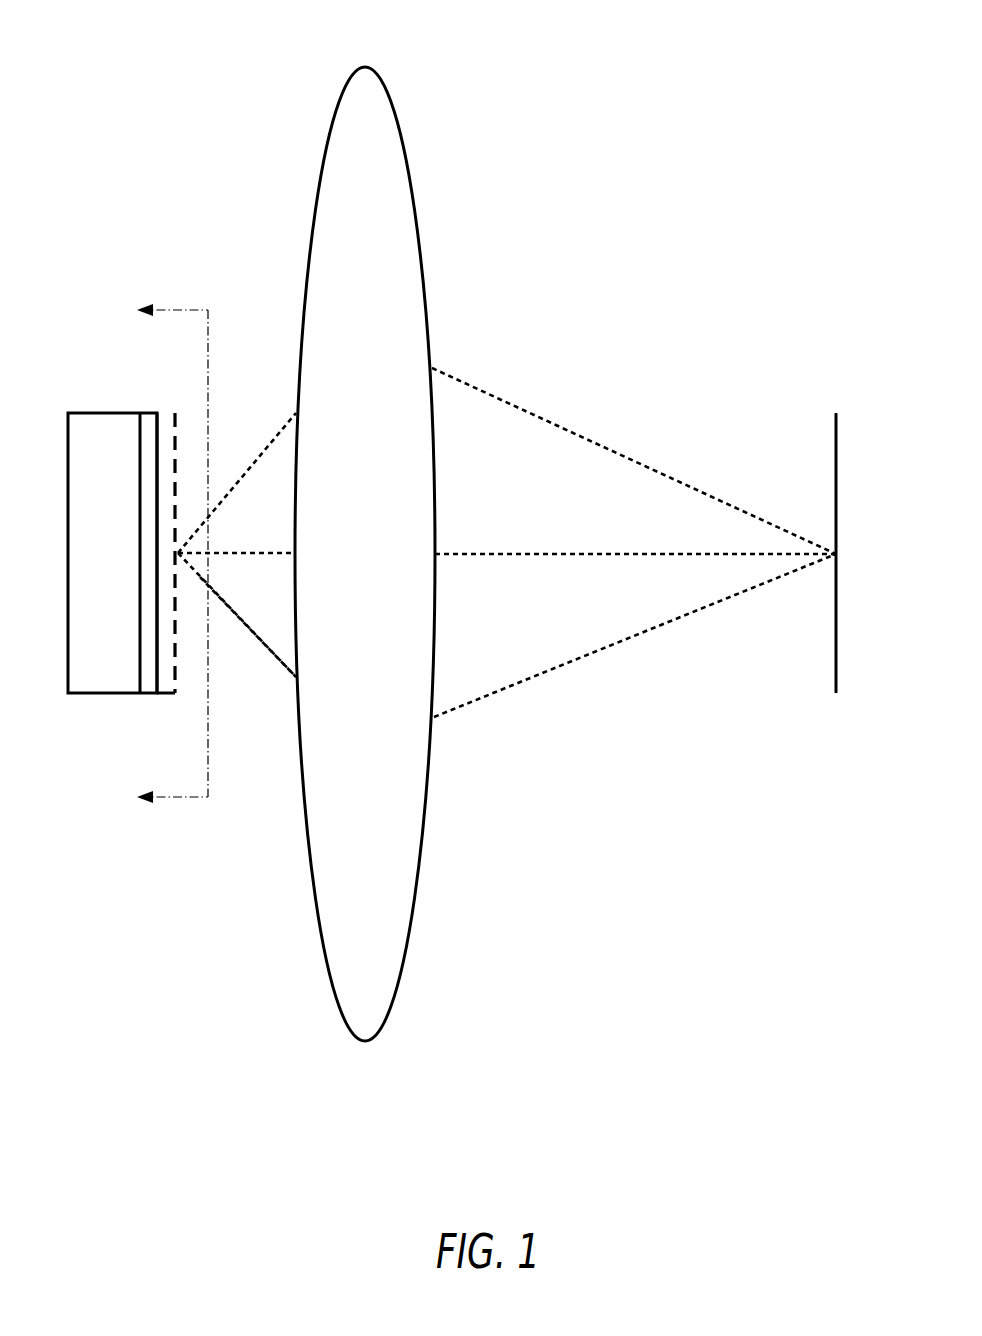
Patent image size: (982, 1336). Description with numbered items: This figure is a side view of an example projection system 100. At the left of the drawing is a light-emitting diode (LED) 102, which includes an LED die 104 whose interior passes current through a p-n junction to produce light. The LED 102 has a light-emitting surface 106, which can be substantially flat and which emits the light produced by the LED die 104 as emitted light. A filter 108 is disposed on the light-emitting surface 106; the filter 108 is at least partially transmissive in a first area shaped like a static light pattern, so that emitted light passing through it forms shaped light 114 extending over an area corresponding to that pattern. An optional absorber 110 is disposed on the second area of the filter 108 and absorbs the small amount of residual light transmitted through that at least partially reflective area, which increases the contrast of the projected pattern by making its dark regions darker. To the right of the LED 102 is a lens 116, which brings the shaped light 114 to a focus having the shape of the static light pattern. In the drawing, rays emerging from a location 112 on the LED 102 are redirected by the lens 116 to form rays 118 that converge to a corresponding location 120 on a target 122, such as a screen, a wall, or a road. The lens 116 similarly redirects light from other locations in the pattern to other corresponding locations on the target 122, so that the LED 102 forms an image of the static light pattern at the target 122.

The projection system 100 is at (210, 138).
The light-emitting diode (LED) 102 is at (52, 275).
The LED die 104 is at (102, 412).
The light-emitting surface 106 is at (139, 676).
The filter 108 is at (150, 412).
The absorber 110 is at (179, 429).
The location 112 is at (179, 558).
The shaped light 114 is at (233, 611).
The lens 116 is at (366, 66).
The rays 118 is at (594, 653).
The corresponding location 120 is at (832, 560).
The target 122 is at (838, 430).